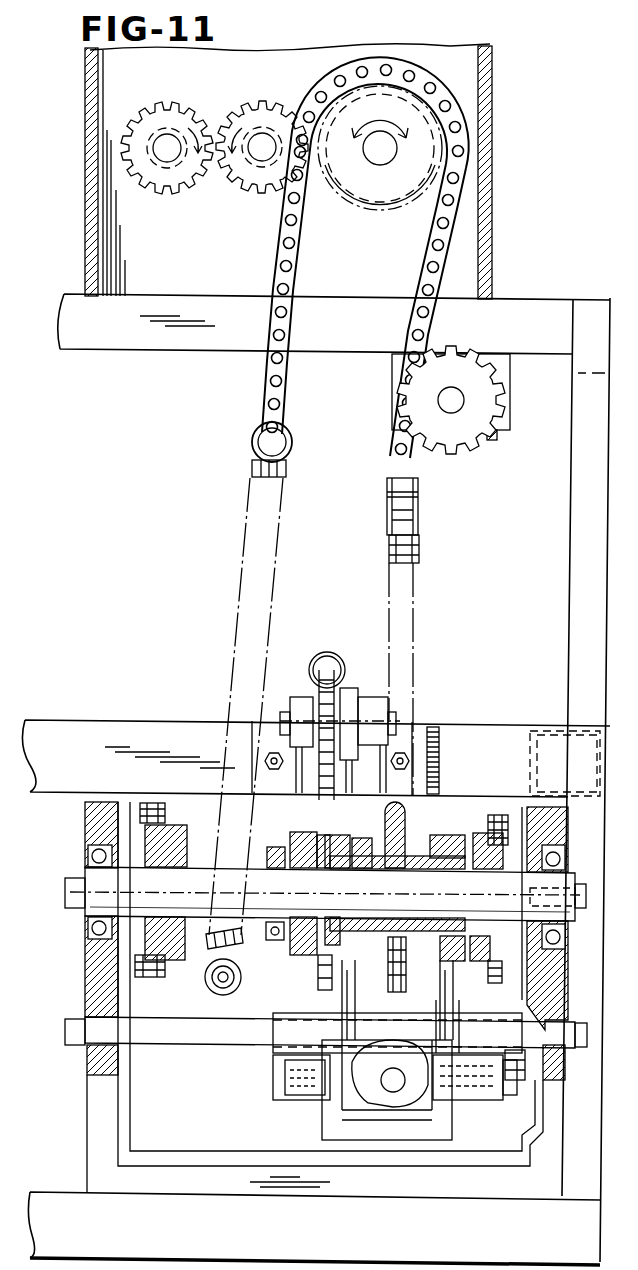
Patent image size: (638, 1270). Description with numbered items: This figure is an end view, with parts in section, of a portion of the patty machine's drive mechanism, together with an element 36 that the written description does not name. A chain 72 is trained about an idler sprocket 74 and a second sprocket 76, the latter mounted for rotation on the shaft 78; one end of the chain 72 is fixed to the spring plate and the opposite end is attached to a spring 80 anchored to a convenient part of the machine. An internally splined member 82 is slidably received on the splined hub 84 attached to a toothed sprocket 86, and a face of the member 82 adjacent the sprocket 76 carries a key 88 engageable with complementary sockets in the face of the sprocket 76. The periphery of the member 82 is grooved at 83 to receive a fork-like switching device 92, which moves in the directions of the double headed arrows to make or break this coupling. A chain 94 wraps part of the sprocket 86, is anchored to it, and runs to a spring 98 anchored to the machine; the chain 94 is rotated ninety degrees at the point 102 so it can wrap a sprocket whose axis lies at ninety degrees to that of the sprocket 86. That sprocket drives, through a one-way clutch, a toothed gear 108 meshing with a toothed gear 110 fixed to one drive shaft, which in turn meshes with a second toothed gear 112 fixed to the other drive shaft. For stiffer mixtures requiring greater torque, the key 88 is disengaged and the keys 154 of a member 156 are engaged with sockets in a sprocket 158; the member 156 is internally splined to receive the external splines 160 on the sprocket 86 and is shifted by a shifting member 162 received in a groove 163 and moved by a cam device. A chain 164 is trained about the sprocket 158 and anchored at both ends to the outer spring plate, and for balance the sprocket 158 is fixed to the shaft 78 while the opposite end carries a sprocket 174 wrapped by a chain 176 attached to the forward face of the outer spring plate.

The frame side wall 36 is at (85, 118).
The chain 72 is at (292, 802).
The idler sprocket 74 is at (312, 712).
The second sprocket 76 is at (316, 975).
The shaft 78 is at (244, 958).
The spring 80 is at (333, 653).
The internally splined member 82 is at (386, 955).
The groove 83 is at (347, 835).
The splined hub 84 is at (382, 845).
The toothed sprocket 86 is at (394, 993).
The key 88 is at (318, 822).
The fork-like switching device 92 is at (337, 1012).
The chain 94 is at (414, 591).
The spring 98 is at (240, 579).
The point 102 is at (421, 490).
The toothed gear 108 is at (378, 198).
The toothed gear 110 is at (257, 196).
The second toothed gear 112 is at (166, 190).
The keys 154 is at (488, 958).
The member 156 is at (478, 834).
The sprocket 158 is at (499, 815).
The external splines 160 is at (445, 950).
The shifting member 162 is at (448, 1000).
The groove 163 is at (445, 835).
The chain 164 is at (514, 1048).
The sprocket 174 is at (190, 840).
The chain 176 is at (166, 806).